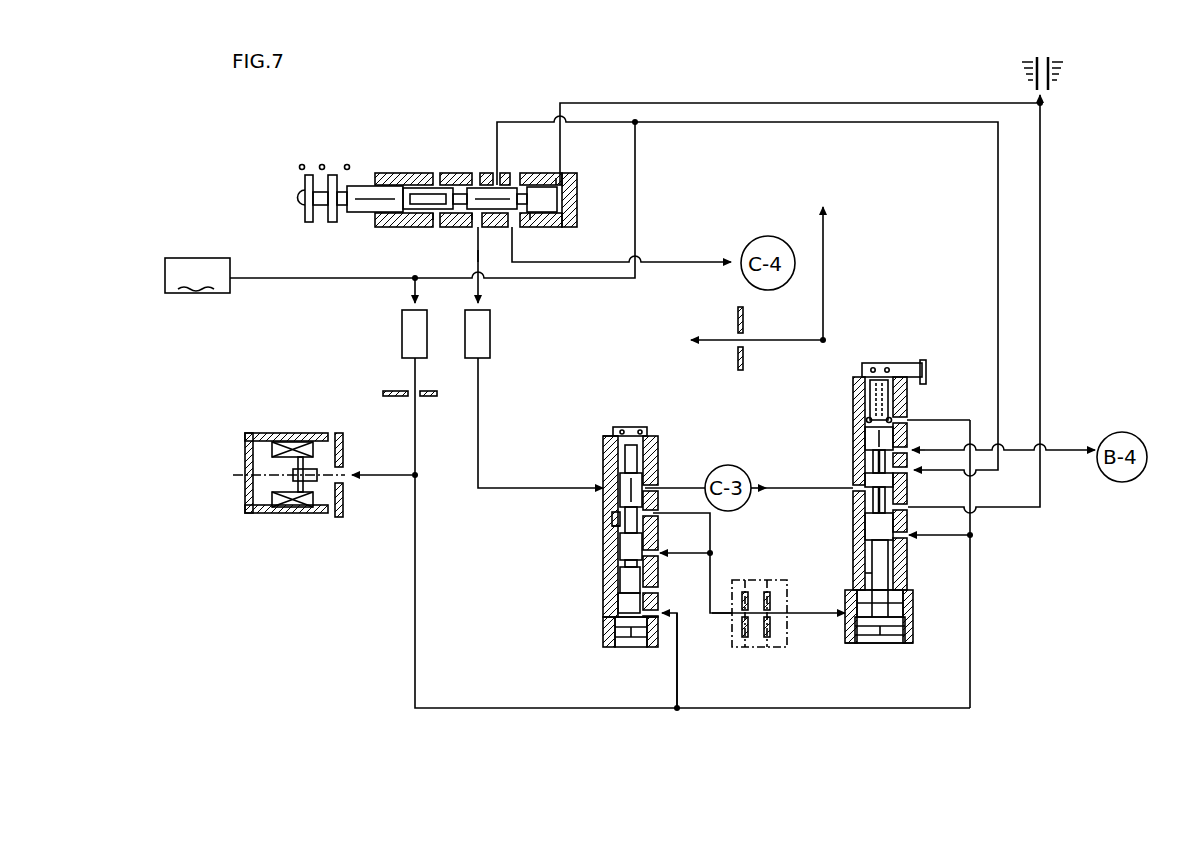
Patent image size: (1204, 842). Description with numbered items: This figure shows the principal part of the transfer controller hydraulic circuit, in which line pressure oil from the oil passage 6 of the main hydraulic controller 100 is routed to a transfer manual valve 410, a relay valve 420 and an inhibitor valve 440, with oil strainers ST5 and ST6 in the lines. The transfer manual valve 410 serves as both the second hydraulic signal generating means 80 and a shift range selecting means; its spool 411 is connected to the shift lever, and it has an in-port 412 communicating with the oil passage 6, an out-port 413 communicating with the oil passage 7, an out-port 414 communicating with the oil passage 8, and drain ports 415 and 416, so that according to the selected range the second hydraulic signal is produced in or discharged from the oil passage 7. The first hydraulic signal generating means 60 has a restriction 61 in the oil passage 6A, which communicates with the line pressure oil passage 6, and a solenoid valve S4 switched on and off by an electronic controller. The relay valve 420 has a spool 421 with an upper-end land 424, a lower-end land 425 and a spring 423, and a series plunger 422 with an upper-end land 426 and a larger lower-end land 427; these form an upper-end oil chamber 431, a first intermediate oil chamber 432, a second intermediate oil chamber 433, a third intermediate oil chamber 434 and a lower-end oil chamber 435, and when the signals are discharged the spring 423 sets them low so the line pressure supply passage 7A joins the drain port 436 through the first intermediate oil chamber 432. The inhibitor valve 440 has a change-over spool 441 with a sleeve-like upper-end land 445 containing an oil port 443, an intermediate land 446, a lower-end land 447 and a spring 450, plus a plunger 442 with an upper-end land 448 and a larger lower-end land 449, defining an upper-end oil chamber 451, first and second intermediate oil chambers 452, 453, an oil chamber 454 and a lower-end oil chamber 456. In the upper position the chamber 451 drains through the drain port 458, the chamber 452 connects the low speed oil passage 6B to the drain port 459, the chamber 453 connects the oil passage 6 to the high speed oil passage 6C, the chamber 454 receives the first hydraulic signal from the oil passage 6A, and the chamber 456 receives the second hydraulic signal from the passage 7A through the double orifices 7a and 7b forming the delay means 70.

The oil passage 6 is at (292, 278).
The oil passage 6A is at (677, 673).
The low speed oil passage 6B is at (1018, 451).
The high speed oil passage 6C is at (780, 487).
The oil passage 7 is at (477, 250).
The line pressure supply oil passage 7A is at (720, 613).
The orifice 7a is at (747, 637).
The orifice 7b is at (770, 640).
The oil passage 8 is at (513, 248).
The first hydraulic signal generating means 60 is at (322, 464).
The restriction 61 is at (430, 396).
The delay means 70 is at (771, 613).
The second hydraulic signal generating means 80 is at (450, 122).
The main hydraulic controller 100 is at (197, 275).
The oil strainer ST5 is at (402, 337).
The oil strainer ST6 is at (490, 335).
The solenoid valve S4 is at (297, 513).
The transfer manual valve 410 is at (420, 170).
The spool 411 is at (437, 197).
The in-port 412 is at (515, 183).
The out-port 413 is at (475, 224).
The out-port 414 is at (530, 225).
The drain port 415 is at (430, 223).
The drain port 416 is at (597, 163).
The relay valve 420 is at (642, 418).
The spool 421 is at (647, 502).
The plunger 422 is at (648, 590).
The spring 423 is at (648, 428).
The upper-end land 424 is at (643, 470).
The lower-end land 425 is at (648, 540).
The upper-end land 426 is at (612, 573).
The lower-end land 427 is at (617, 647).
The upper-end oil chamber 431 is at (630, 428).
The first intermediate oil chamber 432 is at (608, 525).
The second intermediate oil chamber 433 is at (615, 550).
The third intermediate oil chamber 434 is at (612, 600).
The lower-end oil chamber 435 is at (618, 617).
The drain port 436 is at (610, 530).
The inhibitor valve 440 is at (884, 348).
The spool 441 is at (855, 465).
The plunger 442 is at (908, 585).
The oil port 443 is at (912, 408).
The sleeve-like upper-end land 445 is at (858, 418).
The intermediate land 446 is at (858, 503).
The lower-end land 447 is at (855, 548).
The upper-end land 448 is at (855, 573).
The lower-end land 449 is at (852, 645).
The spring 450 is at (893, 362).
The upper-end oil chamber 451 is at (913, 373).
The first intermediate oil chamber 452 is at (855, 442).
The second intermediate oil chamber 453 is at (855, 513).
The oil chamber 454 is at (855, 593).
The lower-end oil chamber 456 is at (907, 618).
The drain port 458 is at (910, 395).
The drain port 459 is at (858, 428).